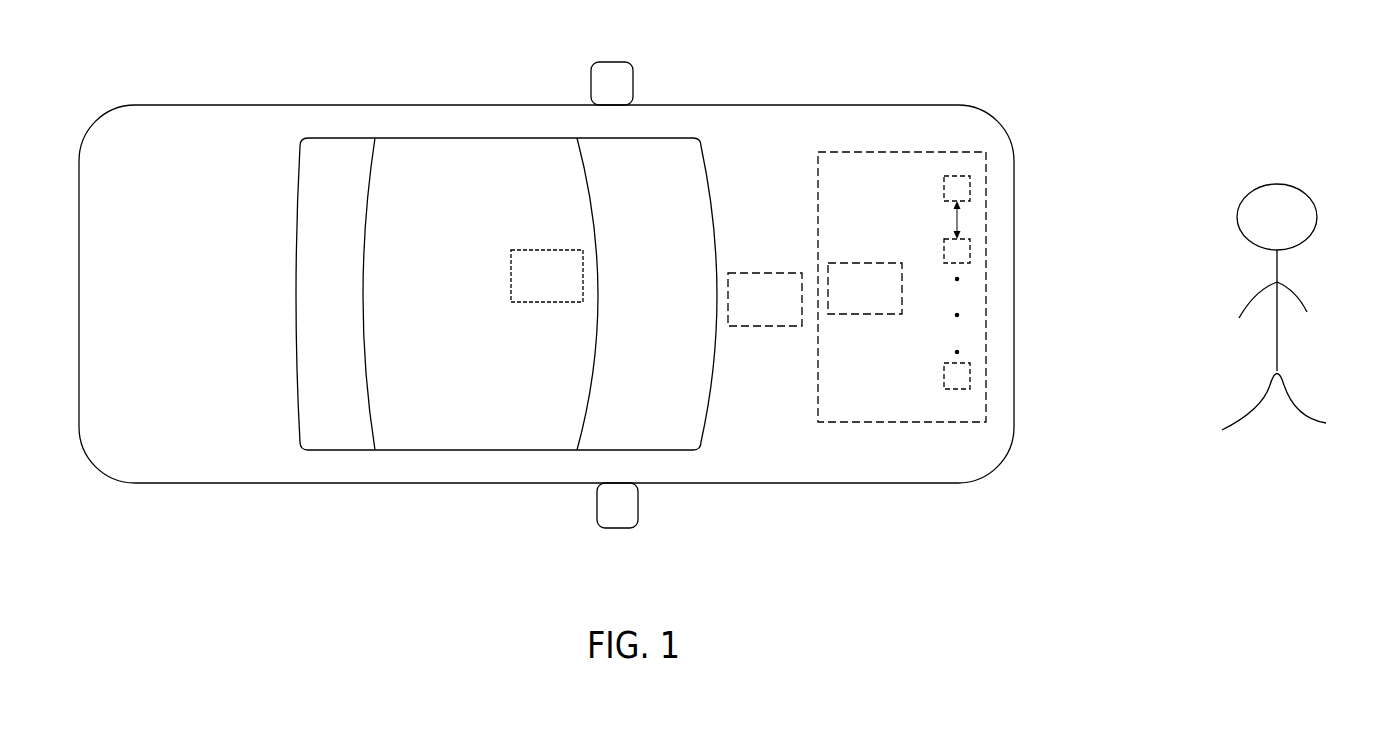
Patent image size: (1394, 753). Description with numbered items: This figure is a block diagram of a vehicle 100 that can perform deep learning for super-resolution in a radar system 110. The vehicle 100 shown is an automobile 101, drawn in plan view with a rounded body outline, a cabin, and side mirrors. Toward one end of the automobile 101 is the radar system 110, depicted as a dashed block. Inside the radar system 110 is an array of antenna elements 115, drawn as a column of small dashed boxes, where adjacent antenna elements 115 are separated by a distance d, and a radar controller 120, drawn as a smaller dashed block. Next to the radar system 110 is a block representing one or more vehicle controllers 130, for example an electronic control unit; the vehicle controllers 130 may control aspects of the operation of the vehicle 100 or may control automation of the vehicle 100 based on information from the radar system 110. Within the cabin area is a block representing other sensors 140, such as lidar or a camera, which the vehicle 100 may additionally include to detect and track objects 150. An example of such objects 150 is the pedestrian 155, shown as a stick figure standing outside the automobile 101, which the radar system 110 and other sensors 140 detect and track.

The vehicle 100 is at (522, 294).
The automobile 101 is at (158, 105).
The radar system 110 is at (898, 217).
The antenna elements 115 is at (976, 244).
The radar controller 120 is at (889, 302).
The vehicle controllers 130 is at (788, 314).
The other sensors 140 is at (570, 290).
The objects 150 is at (1297, 271).
The pedestrian 155 is at (1307, 148).